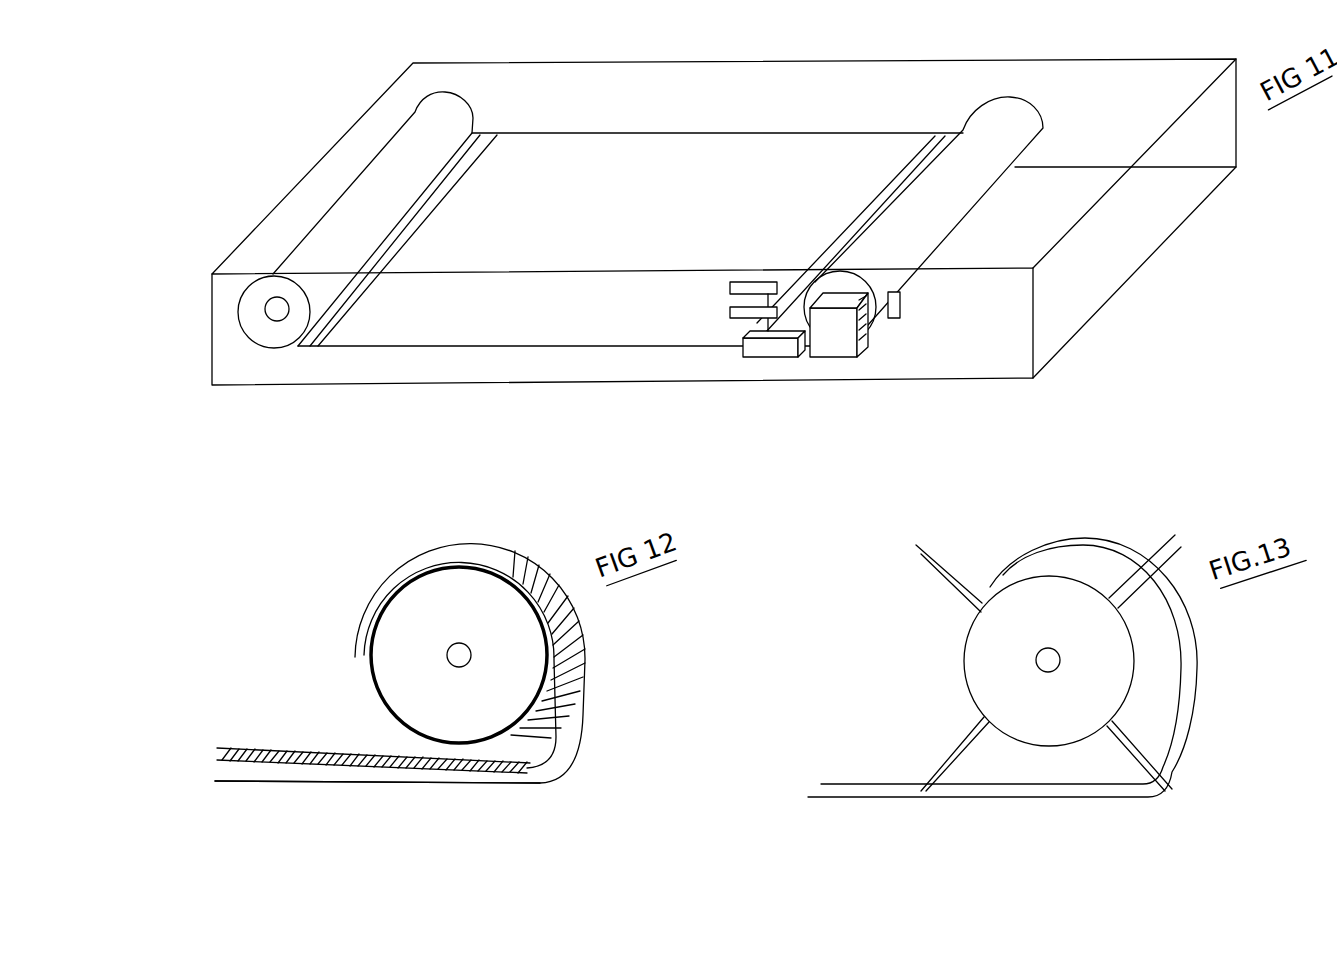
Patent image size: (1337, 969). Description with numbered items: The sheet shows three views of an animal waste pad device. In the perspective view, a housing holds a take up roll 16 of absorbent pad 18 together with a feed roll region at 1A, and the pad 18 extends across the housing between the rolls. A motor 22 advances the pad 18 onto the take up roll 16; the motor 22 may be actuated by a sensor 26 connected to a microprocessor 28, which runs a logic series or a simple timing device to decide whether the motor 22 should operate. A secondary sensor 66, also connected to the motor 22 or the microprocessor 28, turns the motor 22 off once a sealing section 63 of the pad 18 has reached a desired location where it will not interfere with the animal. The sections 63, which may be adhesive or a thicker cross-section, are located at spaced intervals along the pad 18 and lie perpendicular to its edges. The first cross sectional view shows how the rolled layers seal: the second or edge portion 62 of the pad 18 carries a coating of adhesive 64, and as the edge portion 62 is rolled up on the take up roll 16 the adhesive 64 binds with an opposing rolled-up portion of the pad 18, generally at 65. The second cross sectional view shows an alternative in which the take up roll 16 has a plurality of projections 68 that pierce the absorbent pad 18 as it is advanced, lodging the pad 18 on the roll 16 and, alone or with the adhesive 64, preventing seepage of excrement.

In FIG. 11, the roller assembly 1A is at (258, 327).
In FIG. 11, the take up roll 16 is at (1018, 123).
In FIG. 12, the take up roll 16 is at (433, 614).
In FIG. 13, the take up roll 16 is at (1007, 633).
In FIG. 11, the absorbent pad 18 is at (610, 228).
In FIG. 12, the absorbent pad 18 is at (313, 781).
In FIG. 13, the absorbent pad 18 is at (1193, 687).
In FIG. 11, the motor 22 is at (830, 348).
In FIG. 11, the sensor 26 is at (740, 312).
In FIG. 11, the microprocessor 28 is at (777, 347).
In FIG. 11, the second portion 62 is at (706, 148).
In FIG. 11, the section 63 is at (488, 142).
In FIG. 12, the adhesive 64 is at (258, 750).
In FIG. 12, the binding location 65 is at (580, 732).
In FIG. 11, the secondary sensor 66 is at (733, 290).
In FIG. 13, the projections 68 is at (912, 543).